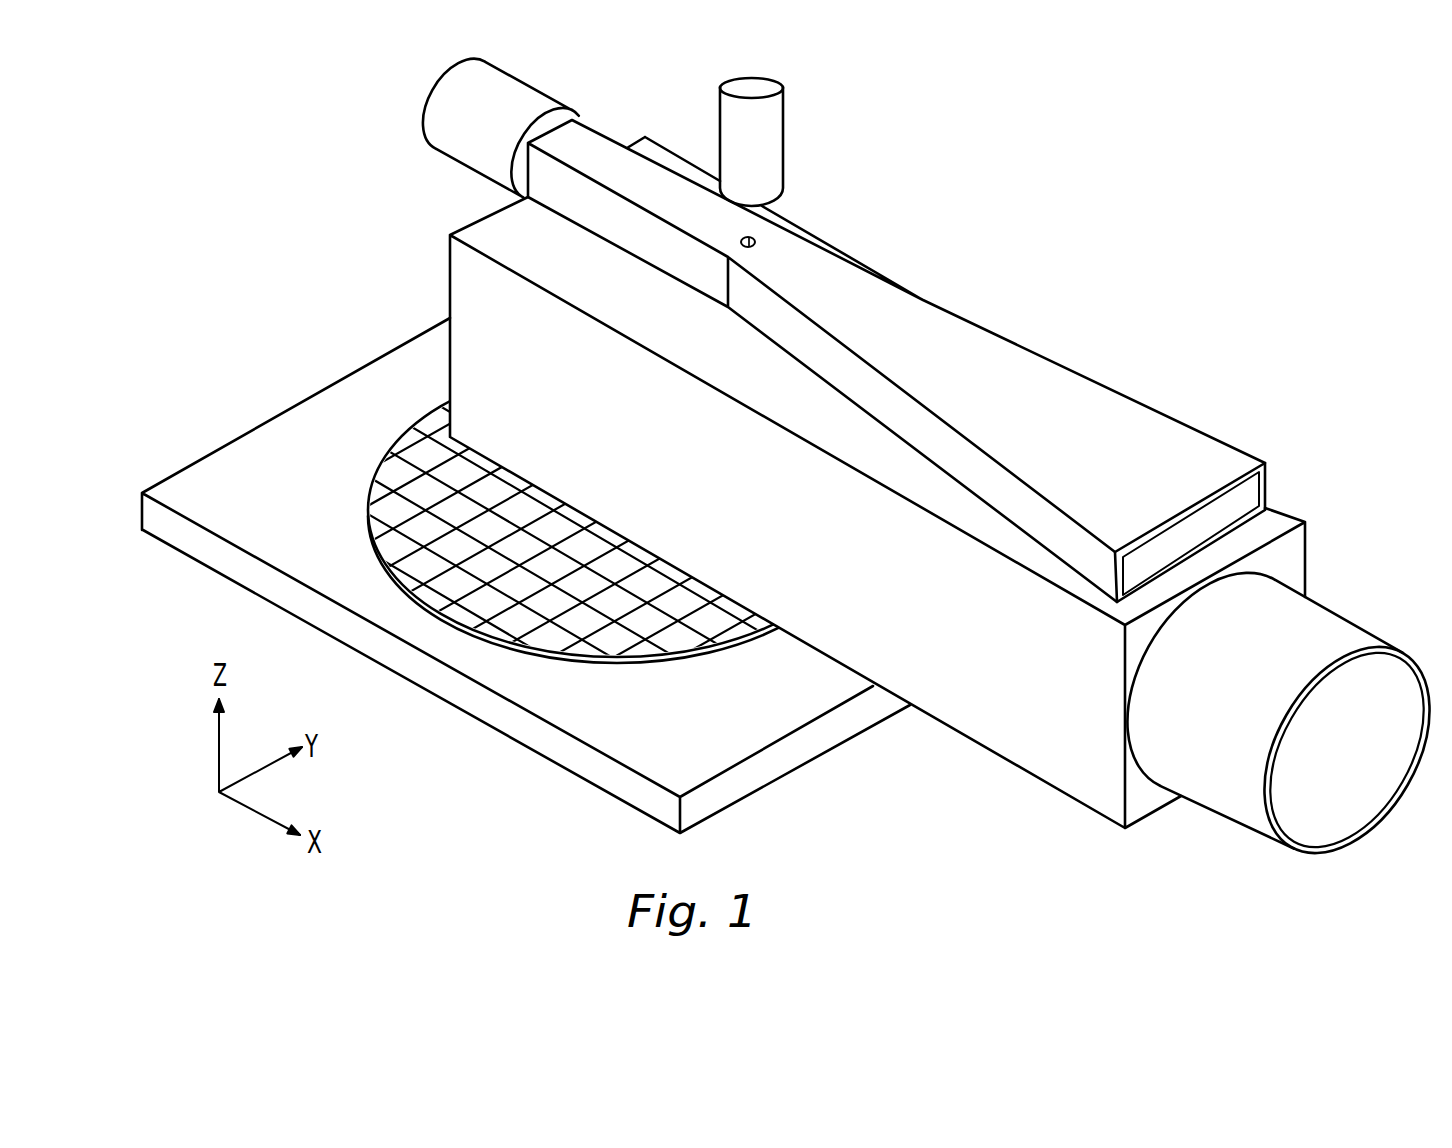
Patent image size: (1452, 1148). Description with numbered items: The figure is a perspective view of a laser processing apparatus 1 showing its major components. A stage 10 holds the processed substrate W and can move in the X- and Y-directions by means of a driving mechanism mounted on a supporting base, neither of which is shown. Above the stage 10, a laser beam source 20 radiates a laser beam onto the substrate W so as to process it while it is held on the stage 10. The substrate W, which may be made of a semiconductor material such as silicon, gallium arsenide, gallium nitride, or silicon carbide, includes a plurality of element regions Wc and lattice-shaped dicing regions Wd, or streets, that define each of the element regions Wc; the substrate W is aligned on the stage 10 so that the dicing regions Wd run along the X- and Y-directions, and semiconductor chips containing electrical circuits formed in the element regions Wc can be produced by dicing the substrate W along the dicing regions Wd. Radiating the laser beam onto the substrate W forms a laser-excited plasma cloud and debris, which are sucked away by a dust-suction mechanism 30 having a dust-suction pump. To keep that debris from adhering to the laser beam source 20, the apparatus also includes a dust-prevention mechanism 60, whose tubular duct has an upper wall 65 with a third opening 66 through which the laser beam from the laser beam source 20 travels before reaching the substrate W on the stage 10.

The laser processing apparatus 1 is at (990, 207).
The stage 10 is at (752, 776).
The laser beam source 20 is at (763, 131).
The dust-suction mechanism 30 is at (937, 779).
The dust-prevention mechanism 60 is at (941, 361).
The upper wall 65 is at (1242, 500).
The third opening 66 is at (753, 240).
The processed substrate W is at (617, 552).
The element regions Wc is at (450, 505).
The dicing regions Wd is at (423, 421).